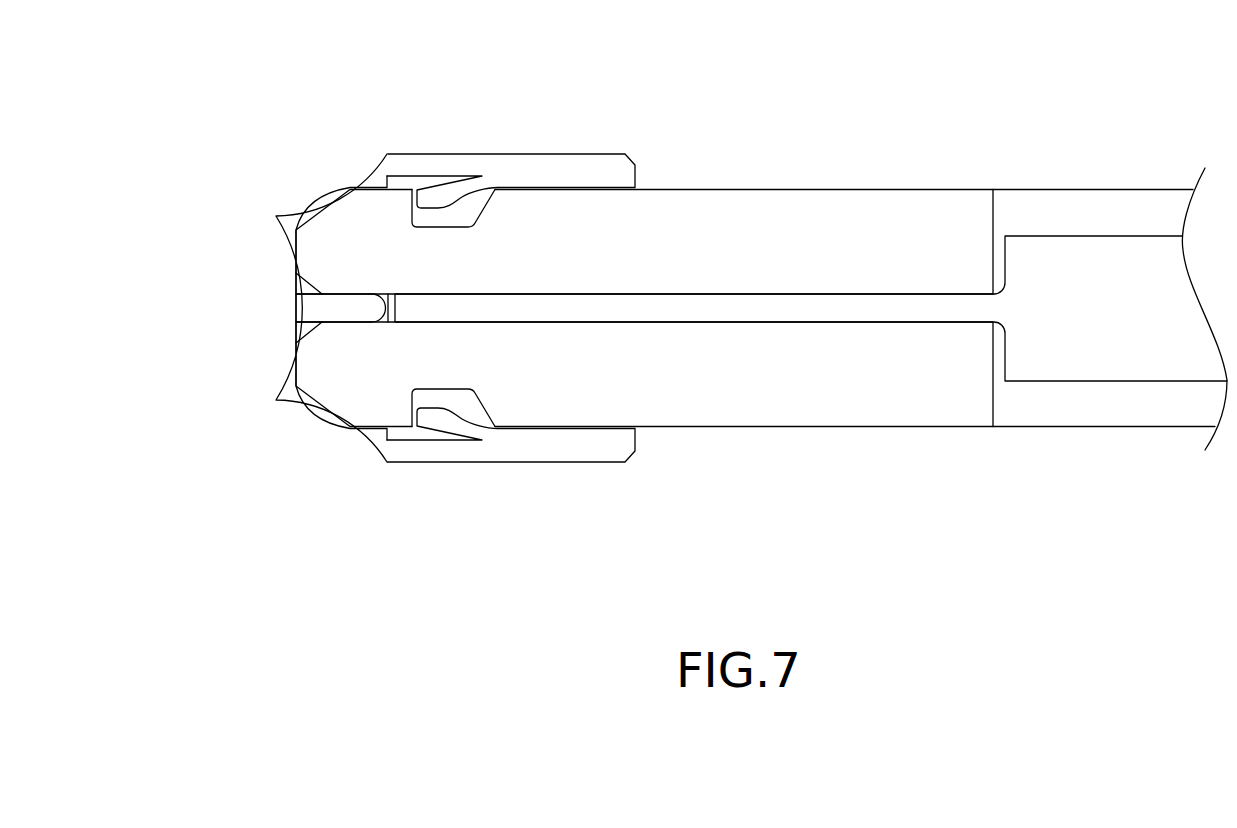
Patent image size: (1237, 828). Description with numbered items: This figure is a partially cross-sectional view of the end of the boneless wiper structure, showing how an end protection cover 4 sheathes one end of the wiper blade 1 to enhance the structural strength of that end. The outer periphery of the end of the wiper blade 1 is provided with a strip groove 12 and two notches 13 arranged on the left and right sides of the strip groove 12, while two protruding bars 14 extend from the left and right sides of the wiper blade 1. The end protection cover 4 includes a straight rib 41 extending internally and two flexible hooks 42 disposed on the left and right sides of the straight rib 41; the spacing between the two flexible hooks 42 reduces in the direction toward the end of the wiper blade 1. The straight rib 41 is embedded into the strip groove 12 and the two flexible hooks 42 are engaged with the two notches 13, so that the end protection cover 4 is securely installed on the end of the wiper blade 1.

The wiper blade 1 is at (1055, 178).
The end protection cover 4 is at (308, 164).
The strip groove 12 is at (347, 297).
The notch 13 is at (478, 208).
The protruding bar 14 is at (813, 202).
The straight rib 41 is at (362, 310).
The flexible hook 42 is at (428, 197).